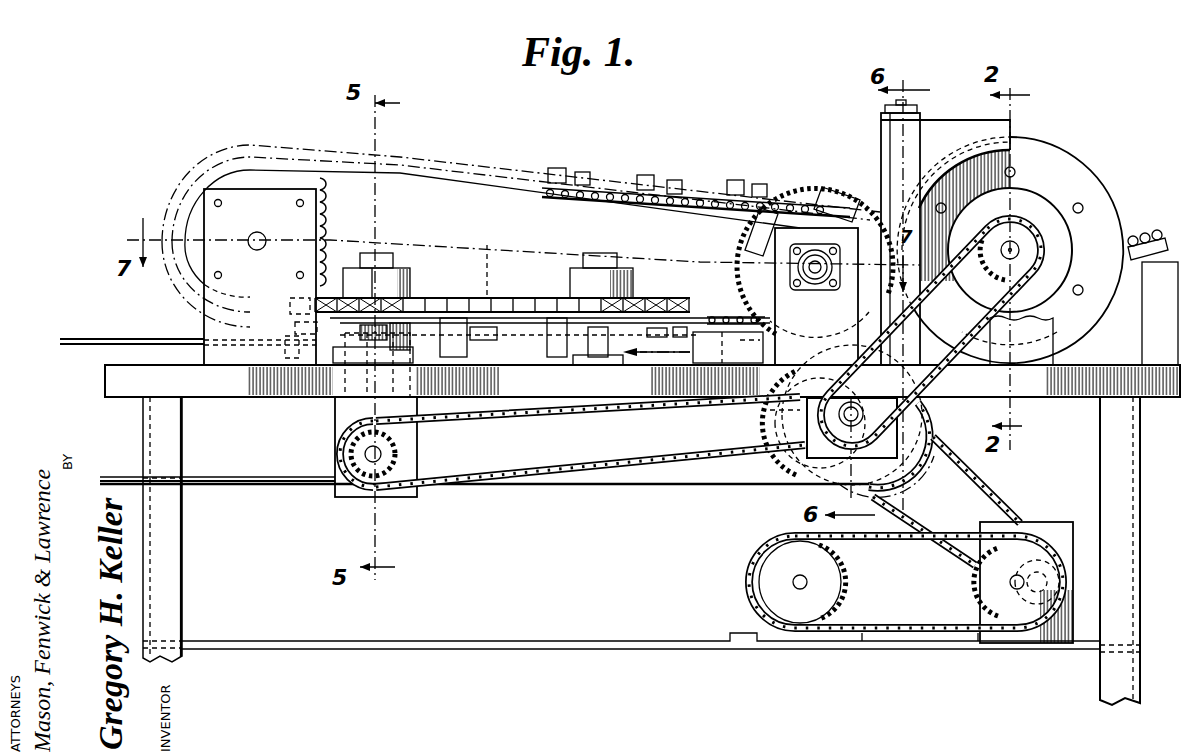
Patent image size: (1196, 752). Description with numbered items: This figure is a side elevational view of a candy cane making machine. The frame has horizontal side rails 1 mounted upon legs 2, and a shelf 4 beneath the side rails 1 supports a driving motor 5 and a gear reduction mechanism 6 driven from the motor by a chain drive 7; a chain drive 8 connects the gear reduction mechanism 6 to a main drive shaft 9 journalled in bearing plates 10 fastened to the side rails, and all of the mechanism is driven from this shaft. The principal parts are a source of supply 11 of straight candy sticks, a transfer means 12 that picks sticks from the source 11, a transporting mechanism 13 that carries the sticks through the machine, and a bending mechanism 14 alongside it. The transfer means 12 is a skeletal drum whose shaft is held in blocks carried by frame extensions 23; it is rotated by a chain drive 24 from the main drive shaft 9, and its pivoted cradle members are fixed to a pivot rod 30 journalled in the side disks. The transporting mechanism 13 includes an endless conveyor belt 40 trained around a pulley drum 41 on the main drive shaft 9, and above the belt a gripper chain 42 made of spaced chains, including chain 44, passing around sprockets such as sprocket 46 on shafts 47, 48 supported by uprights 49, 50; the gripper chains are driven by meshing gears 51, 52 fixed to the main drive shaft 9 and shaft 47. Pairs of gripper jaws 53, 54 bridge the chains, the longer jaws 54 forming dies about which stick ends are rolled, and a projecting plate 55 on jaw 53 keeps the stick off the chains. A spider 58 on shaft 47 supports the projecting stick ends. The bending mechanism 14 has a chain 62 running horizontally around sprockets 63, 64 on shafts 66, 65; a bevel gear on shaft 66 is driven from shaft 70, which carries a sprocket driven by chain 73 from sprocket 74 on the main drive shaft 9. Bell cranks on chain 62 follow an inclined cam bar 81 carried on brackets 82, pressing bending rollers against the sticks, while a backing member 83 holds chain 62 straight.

The horizontal side rails 1 is at (1078, 402).
The legs 2 is at (160, 556).
The shelf 4 is at (655, 641).
The driving motor 5 is at (756, 562).
The gear reduction mechanism 6 is at (1043, 524).
The chain drive 7 is at (885, 540).
The chain drive 8 is at (993, 485).
The main drive shaft 9 is at (858, 422).
The bearing plates 10 is at (905, 472).
The source of supply 11 is at (1148, 240).
The transfer means 12 is at (1044, 168).
The transporting mechanism 13 is at (723, 315).
The bending mechanism 14 is at (522, 298).
The frame extensions 23 is at (1044, 338).
The chain drive 24 is at (960, 352).
The pivot rod 30 is at (1082, 284).
The endless conveyor belt 40 is at (118, 340).
The pulley drum 41 is at (790, 466).
The gripper chain 42 is at (687, 190).
The chain 44 is at (612, 202).
The sprocket 46 is at (356, 212).
The shaft 47 is at (815, 274).
The shaft 48 is at (262, 238).
The upright 49 is at (822, 196).
The upright 50 is at (205, 324).
The gear 51 is at (776, 426).
The gear 52 is at (752, 272).
The gripper jaw 53 is at (598, 159).
The gripper jaw 54 is at (557, 168).
The projecting plate 55 is at (758, 184).
The spider 58 is at (748, 234).
The chain 62 is at (478, 298).
The sprocket 63 is at (405, 298).
The sprocket 64 is at (633, 284).
The shaft 65 is at (605, 256).
The shaft 66 is at (380, 253).
The shaft 70 is at (382, 455).
The chain 73 is at (596, 462).
The sprocket 74 is at (770, 414).
The cam bar 81 is at (540, 330).
The brackets 82 is at (450, 322).
The backing member 83 is at (486, 259).